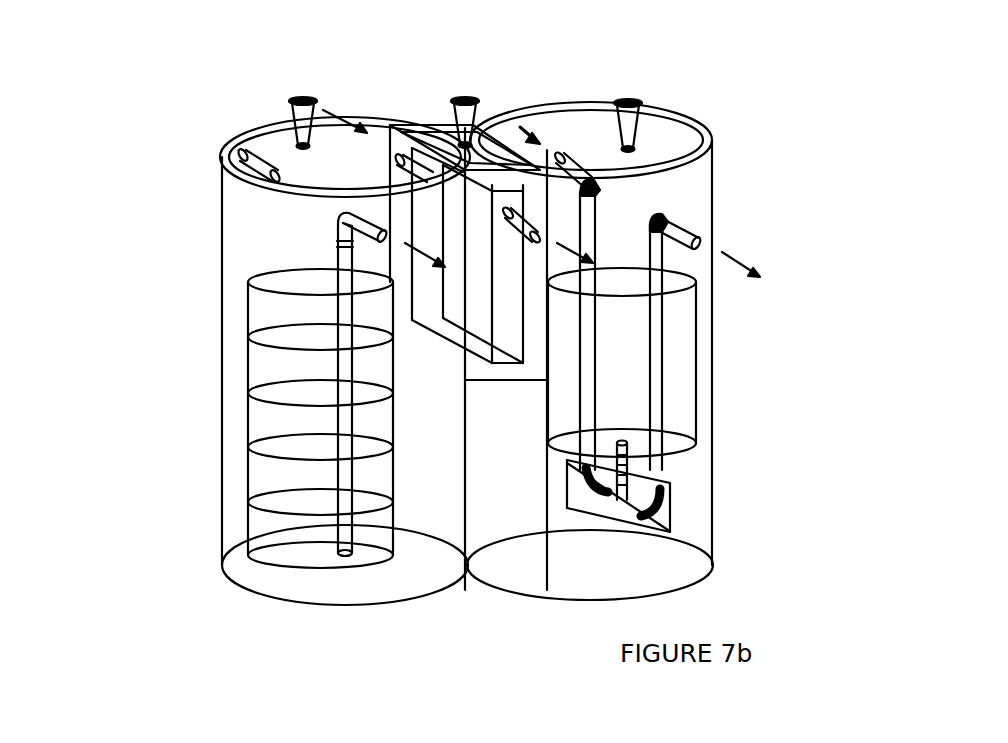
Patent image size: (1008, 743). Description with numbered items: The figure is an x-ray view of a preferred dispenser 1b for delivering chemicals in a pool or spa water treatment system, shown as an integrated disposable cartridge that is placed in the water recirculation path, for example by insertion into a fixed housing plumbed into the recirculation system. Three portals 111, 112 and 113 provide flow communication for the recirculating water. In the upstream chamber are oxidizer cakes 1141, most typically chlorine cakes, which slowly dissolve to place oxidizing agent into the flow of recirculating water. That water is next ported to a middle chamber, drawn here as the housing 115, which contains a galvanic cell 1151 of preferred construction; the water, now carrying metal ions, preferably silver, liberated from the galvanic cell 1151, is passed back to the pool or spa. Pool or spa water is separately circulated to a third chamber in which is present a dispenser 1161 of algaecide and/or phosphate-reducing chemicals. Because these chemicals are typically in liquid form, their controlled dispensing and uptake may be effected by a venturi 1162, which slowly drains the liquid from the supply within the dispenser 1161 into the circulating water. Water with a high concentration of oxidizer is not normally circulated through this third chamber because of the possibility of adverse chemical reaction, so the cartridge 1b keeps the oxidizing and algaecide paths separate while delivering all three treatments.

The dispenser 1b is at (690, 133).
The portal 111 is at (310, 92).
The portal 112 is at (462, 93).
The portal 113 is at (630, 93).
The galvanic cell 1151 is at (532, 120).
The filter unit housing 115 is at (505, 330).
The oxidizer cakes 1141 is at (253, 237).
The dispenser of algaecide and/or phosphate-reducing chemicals 1161 is at (680, 353).
The venturi 1162 is at (680, 512).